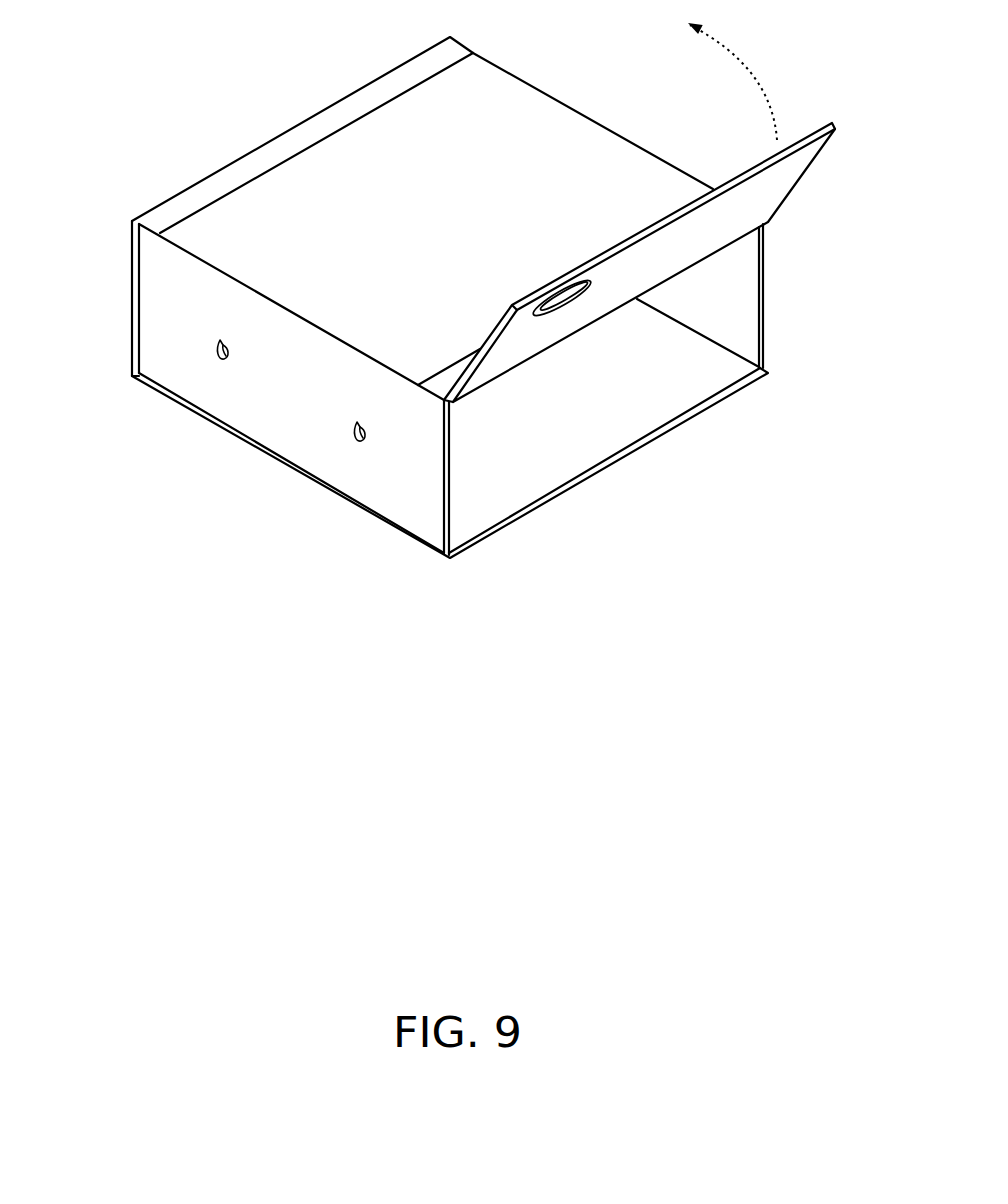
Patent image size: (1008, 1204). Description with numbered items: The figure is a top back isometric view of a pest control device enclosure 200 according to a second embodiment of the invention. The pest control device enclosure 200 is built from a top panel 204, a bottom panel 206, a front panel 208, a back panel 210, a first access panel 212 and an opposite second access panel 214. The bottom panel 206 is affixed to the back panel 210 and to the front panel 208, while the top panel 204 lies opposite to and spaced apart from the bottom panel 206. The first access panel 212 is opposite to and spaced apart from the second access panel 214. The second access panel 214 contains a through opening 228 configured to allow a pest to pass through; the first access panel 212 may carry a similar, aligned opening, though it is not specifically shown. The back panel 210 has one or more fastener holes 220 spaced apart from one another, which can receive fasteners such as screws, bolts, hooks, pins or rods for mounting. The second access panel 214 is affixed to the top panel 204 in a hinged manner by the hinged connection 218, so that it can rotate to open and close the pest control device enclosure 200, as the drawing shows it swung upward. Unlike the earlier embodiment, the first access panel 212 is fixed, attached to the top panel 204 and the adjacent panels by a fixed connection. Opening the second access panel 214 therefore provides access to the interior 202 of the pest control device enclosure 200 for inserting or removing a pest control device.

The pest control device enclosure 200 is at (222, 104).
The interior 202 is at (658, 395).
The top panel 204 is at (567, 150).
The bottom panel 206 is at (603, 438).
The front panel 208 is at (763, 287).
The back panel 210 is at (277, 412).
The first access panel 212 is at (132, 280).
The second access panel 214 is at (780, 186).
The hinged connection 218 is at (444, 398).
The fastener holes 220 is at (218, 362).
The through opening 228 is at (585, 295).